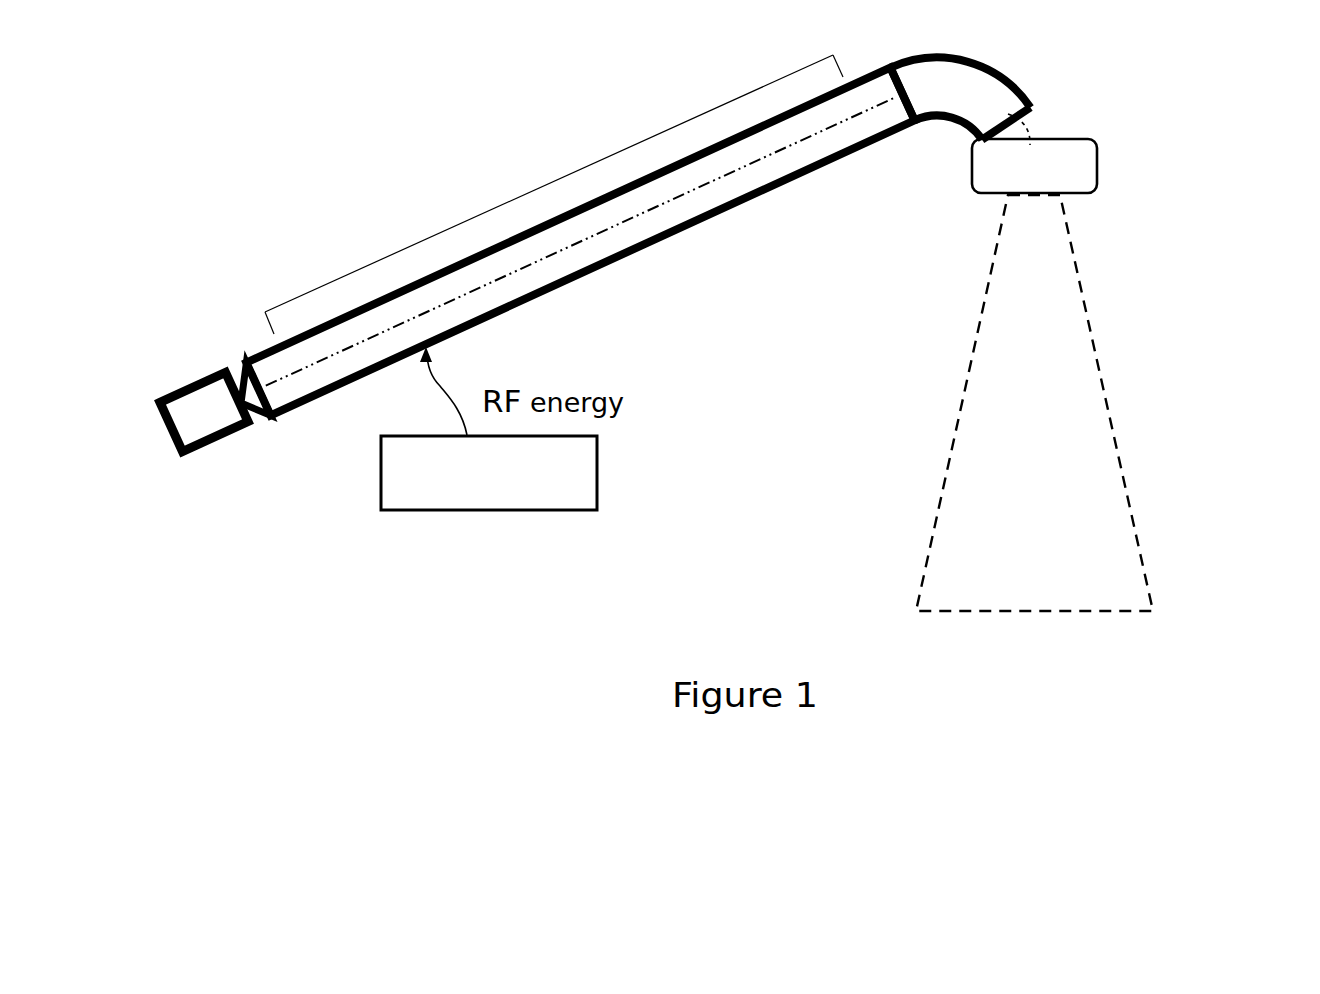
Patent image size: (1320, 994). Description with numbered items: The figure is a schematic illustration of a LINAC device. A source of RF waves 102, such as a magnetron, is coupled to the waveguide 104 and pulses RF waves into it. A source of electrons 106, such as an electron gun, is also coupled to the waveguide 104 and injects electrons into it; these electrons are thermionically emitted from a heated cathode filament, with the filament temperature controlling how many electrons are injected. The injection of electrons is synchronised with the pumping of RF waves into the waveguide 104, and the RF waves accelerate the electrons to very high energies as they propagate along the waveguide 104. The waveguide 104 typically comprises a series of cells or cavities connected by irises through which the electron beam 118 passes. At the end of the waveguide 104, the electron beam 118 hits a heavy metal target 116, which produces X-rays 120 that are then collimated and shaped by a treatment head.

The source of RF waves 102 is at (447, 510).
The waveguide 104 is at (547, 182).
The source of electrons 106 is at (201, 447).
The heavy metal target 116 is at (1097, 190).
The electron beam 118 is at (348, 347).
The X-rays 120 is at (1123, 488).